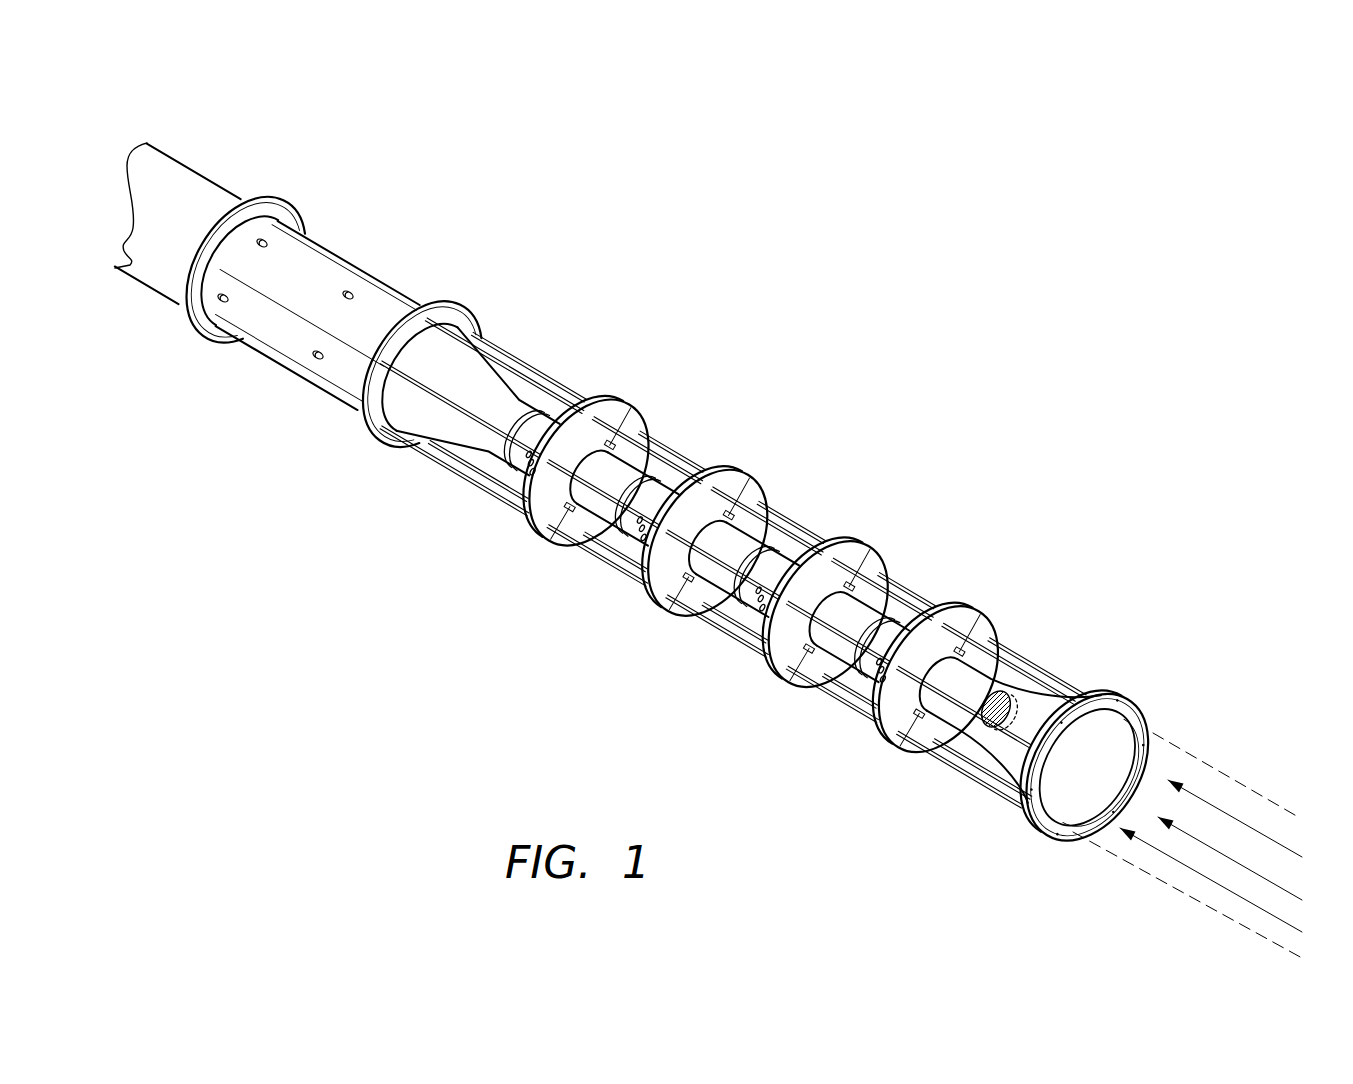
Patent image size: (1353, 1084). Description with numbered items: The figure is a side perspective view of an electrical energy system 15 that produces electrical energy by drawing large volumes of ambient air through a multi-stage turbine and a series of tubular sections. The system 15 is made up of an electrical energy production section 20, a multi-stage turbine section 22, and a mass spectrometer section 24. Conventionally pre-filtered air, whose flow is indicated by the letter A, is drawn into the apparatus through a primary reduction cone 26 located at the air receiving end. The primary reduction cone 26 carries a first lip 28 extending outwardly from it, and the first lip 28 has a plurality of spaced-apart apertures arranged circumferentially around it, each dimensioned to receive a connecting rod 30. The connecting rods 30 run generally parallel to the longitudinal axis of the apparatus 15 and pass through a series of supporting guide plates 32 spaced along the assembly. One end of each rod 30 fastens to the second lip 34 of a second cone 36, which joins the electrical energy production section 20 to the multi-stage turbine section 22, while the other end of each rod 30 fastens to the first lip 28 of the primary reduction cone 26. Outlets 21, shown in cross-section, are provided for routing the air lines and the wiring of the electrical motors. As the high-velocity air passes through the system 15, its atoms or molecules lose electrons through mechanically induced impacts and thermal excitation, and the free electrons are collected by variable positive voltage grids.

The electrical energy system 15 is at (1016, 292).
The electrical energy production section 20 is at (826, 350).
The outlets 21 is at (270, 243).
The multi-stage turbine section 22 is at (460, 227).
The mass spectrometer section 24 is at (207, 192).
The primary reduction cone 26 is at (1036, 688).
The first lip 28 is at (1130, 712).
The connecting rod 30 is at (968, 790).
The supporting guide plates 32 is at (992, 597).
The second lip 34 is at (472, 312).
The second cone 36 is at (470, 383).
The air flow A is at (1230, 760).